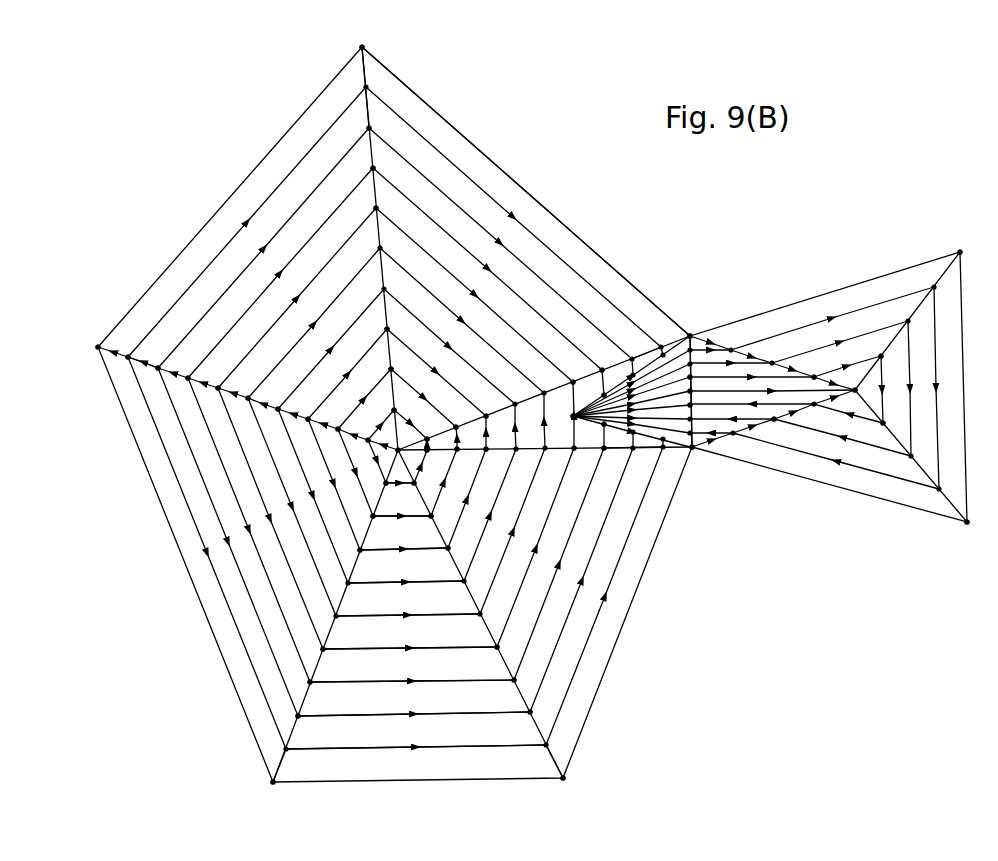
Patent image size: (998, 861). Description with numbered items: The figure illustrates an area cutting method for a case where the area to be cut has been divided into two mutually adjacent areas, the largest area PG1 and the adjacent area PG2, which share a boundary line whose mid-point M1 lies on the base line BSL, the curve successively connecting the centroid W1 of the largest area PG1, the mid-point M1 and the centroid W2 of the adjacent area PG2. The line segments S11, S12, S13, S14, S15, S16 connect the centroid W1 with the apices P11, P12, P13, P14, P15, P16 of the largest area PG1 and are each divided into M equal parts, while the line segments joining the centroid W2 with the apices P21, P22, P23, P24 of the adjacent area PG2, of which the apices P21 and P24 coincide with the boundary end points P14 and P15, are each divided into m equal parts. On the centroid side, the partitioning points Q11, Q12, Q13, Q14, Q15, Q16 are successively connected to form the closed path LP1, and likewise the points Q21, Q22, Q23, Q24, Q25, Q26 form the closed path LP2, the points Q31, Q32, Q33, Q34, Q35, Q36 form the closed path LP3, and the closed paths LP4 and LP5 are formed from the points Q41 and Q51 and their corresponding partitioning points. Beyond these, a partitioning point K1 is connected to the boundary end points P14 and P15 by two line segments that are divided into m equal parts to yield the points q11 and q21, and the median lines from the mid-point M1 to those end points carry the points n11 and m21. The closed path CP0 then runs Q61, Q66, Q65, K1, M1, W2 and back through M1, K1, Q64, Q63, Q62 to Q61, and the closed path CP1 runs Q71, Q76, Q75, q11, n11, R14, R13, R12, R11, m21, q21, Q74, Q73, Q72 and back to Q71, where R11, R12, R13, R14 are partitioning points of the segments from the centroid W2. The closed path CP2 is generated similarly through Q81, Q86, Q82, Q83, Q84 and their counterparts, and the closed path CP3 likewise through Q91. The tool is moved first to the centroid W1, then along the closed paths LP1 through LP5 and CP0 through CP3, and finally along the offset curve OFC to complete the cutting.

The largest area PG1 is at (630, 612).
The adjacent area PG2 is at (856, 478).
The base line BSL is at (787, 392).
The offset curve OFC is at (544, 206).
The line segment S11 is at (157, 369).
The line segment S12 is at (281, 766).
The line segment S13 is at (552, 757).
The line segment S14 is at (632, 450).
The line segment S15 is at (648, 353).
The line segment S16 is at (369, 105).
The closed path LP1 is at (408, 487).
The closed path LP2 is at (401, 519).
The closed path LP3 is at (388, 553).
The closed path LP4 is at (378, 586).
The closed path LP5 is at (384, 618).
The closed path CP0 is at (432, 649).
The closed path CP1 is at (399, 683).
The closed path CP2 is at (401, 716).
The closed path CP3 is at (401, 749).
The apex P11 is at (85, 349).
The apex P12 is at (267, 797).
The apex P13 is at (578, 789).
The apex P14 is at (700, 463).
The apex P15 is at (695, 318).
The apex P16 is at (373, 37).
The apex P21 is at (699, 474).
The apex P22 is at (967, 537).
The apex P23 is at (974, 246).
The apex P24 is at (696, 326).
The centroid W1 is at (388, 442).
The centroid W2 is at (880, 400).
The partitioning point K1 is at (581, 404).
The partitioning point q11 is at (615, 383).
The partitioning point q21 is at (593, 429).
The partitioning point n11 is at (705, 378).
The mid-point M1 is at (703, 390).
The partitioning point m21 is at (707, 403).
The partitioning point R11 is at (801, 420).
The partitioning point R12 is at (895, 422).
The partitioning point R13 is at (894, 364).
The partitioning point R14 is at (821, 367).
The partitioning point Q11 is at (356, 433).
The partitioning point Q21 is at (331, 417).
The partitioning point Q31 is at (302, 407).
The partitioning point Q41 is at (272, 398).
The partitioning point Q51 is at (242, 388).
The partitioning point Q61 is at (211, 378).
The partitioning point Q71 is at (180, 368).
The partitioning point Q81 is at (151, 358).
The partitioning point Q91 is at (119, 348).
The partitioning point Q12 is at (373, 492).
The partitioning point Q22 is at (361, 525).
The partitioning point Q32 is at (349, 558).
The partitioning point Q62 is at (338, 661).
The partitioning point Q72 is at (324, 694).
The partitioning point Q82 is at (311, 728).
The partitioning point Q13 is at (427, 493).
The partitioning point Q23 is at (424, 528).
The partitioning point Q33 is at (439, 560).
The partitioning point Q63 is at (483, 659).
The partitioning point Q73 is at (502, 692).
The partitioning point Q83 is at (518, 724).
The partitioning point Q14 is at (434, 462).
The partitioning point Q24 is at (465, 461).
The partitioning point Q34 is at (497, 461).
The partitioning point Q64 is at (579, 460).
The partitioning point Q74 is at (611, 460).
The partitioning point Q15 is at (432, 431).
The partitioning point Q25 is at (458, 419).
The partitioning point Q35 is at (494, 409).
The partitioning point Q65 is at (585, 374).
The partitioning point Q75 is at (614, 362).
The partitioning point Q16 is at (407, 412).
The partitioning point Q26 is at (405, 378).
The partitioning point Q36 is at (399, 332).
The partitioning point Q66 is at (391, 209).
The partitioning point Q76 is at (388, 164).
The partitioning point Q86 is at (384, 124).